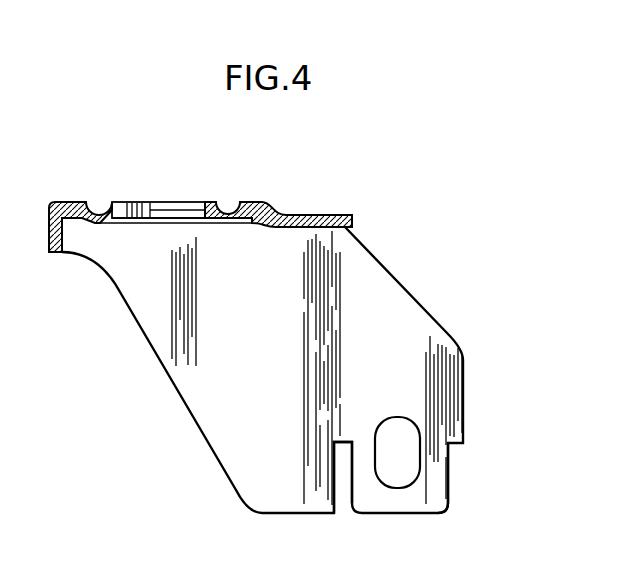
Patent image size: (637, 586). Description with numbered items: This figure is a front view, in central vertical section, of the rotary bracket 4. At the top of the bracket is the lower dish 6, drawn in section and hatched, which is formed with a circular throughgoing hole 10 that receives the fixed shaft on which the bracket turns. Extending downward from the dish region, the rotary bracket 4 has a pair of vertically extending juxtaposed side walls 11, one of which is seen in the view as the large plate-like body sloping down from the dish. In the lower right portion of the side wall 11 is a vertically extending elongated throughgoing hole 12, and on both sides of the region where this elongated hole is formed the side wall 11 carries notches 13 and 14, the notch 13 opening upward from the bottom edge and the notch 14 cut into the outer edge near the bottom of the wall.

The rotary bracket 4 is at (466, 265).
The lower dish 6 is at (262, 204).
The circular throughgoing hole 10 is at (148, 207).
The side wall 11 is at (192, 388).
The elongated throughgoing hole 12 is at (421, 447).
The notch 13 is at (342, 494).
The notch 14 is at (449, 487).